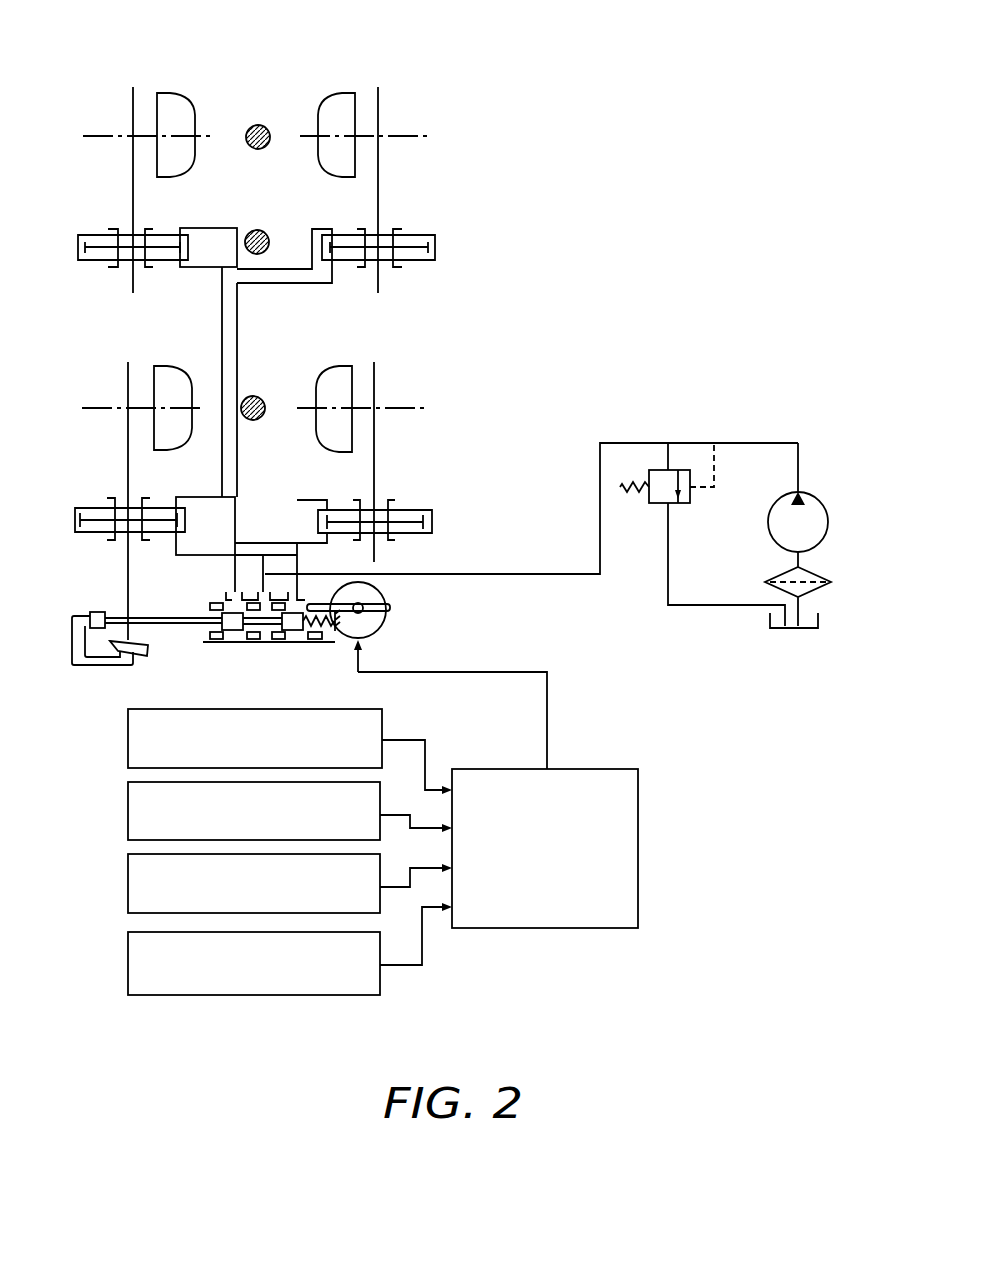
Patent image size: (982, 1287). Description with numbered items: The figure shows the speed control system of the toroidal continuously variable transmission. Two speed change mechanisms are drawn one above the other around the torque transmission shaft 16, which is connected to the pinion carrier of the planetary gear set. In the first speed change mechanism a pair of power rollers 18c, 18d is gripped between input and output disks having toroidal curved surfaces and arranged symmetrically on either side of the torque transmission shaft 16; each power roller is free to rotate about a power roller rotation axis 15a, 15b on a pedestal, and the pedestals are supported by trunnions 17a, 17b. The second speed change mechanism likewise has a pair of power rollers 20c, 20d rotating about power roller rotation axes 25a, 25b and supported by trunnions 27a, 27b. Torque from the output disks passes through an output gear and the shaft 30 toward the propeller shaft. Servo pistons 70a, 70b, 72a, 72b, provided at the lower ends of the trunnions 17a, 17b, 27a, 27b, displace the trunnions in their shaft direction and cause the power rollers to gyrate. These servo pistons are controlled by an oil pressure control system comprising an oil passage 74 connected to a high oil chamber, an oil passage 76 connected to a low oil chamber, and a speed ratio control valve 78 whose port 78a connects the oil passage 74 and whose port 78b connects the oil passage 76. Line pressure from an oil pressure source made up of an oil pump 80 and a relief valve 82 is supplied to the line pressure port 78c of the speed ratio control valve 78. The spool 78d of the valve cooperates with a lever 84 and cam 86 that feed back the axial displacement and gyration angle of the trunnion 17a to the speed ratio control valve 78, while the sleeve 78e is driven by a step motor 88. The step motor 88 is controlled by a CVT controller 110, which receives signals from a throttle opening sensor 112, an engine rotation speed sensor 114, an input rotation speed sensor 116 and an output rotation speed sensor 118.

The power roller rotation axis 15a is at (95, 407).
The power roller rotation axis 15b is at (410, 407).
The torque transmission shaft 16 is at (262, 126).
The trunnion 17a is at (128, 444).
The trunnion 17b is at (378, 445).
The power roller 18c is at (173, 366).
The power roller 18d is at (340, 366).
The power roller 20c is at (172, 93).
The power roller 20d is at (342, 93).
The power roller rotation axis 25a is at (100, 136).
The power roller rotation axis 25b is at (405, 135).
The trunnion 27a is at (133, 175).
The trunnion 27b is at (378, 178).
The shaft 30 is at (262, 232).
The servo piston 70a is at (105, 502).
The servo piston 70b is at (420, 505).
The servo piston 72a is at (108, 232).
The servo piston 72b is at (405, 232).
The oil passage 74 is at (237, 432).
The oil passage 76 is at (175, 545).
The speed ratio control valve 78 is at (265, 584).
The port 78a is at (232, 590).
The port 78b is at (303, 595).
The line pressure port 78c is at (262, 590).
The spool 78d is at (232, 628).
The sleeve 78e is at (315, 640).
The oil pump 80 is at (805, 497).
The relief valve 82 is at (680, 505).
The lever 84 is at (95, 668).
The cam 86 is at (148, 650).
The step motor 88 is at (386, 600).
The CVT controller 110 is at (597, 769).
The throttle opening sensor 112 is at (128, 745).
The engine rotation speed sensor 114 is at (128, 817).
The input rotation speed sensor 116 is at (128, 890).
The output rotation speed sensor 118 is at (128, 972).